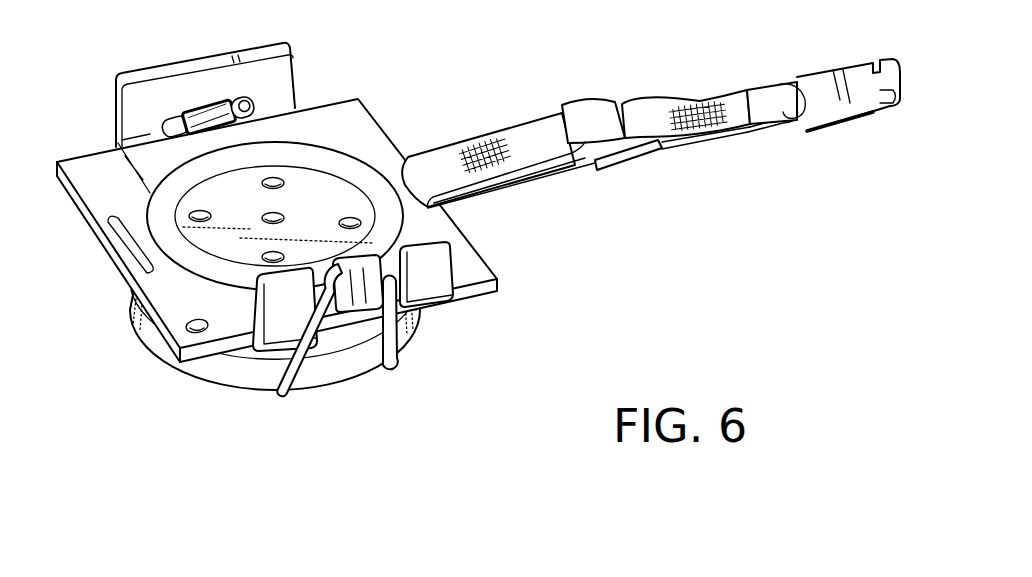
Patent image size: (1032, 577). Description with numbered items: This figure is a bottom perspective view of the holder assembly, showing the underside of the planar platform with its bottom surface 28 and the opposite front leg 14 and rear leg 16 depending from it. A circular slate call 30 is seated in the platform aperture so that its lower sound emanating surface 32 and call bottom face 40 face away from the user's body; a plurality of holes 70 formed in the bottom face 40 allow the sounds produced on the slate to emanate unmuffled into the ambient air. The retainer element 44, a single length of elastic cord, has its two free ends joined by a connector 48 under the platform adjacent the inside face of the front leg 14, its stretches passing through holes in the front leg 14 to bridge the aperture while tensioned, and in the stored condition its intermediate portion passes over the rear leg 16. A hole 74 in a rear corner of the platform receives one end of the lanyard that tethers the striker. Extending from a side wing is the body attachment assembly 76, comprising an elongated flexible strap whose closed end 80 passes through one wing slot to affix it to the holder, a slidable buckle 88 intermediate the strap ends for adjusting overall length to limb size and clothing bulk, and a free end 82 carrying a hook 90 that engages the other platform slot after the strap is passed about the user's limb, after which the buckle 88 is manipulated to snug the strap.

The front leg 14 is at (282, 66).
The connector 48 is at (200, 110).
The slate call 30 is at (303, 192).
The sound emanating surface 32 is at (190, 230).
The call bottom face 40 is at (223, 270).
The holes 70 is at (271, 214).
The hole 74 is at (188, 327).
The bottom surface 28 is at (472, 265).
The rear leg 16 is at (437, 283).
The retainer element 44 is at (399, 324).
The body attachment assembly 76 is at (636, 93).
The closed end 80 is at (500, 193).
The slidable buckle 88 is at (650, 160).
The free end 82 is at (770, 124).
The hook 90 is at (813, 78).